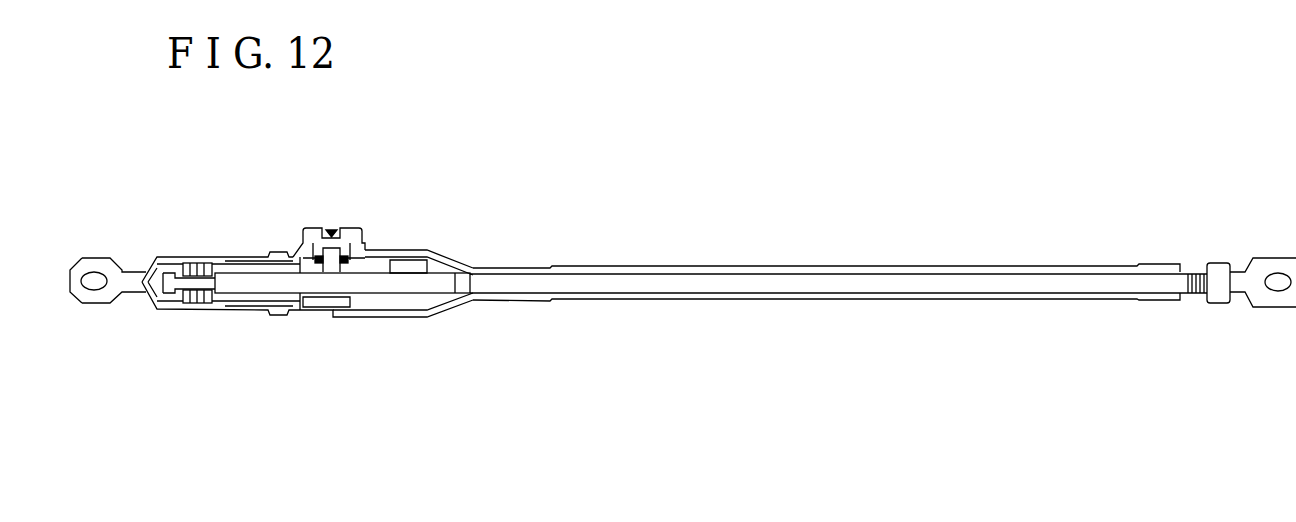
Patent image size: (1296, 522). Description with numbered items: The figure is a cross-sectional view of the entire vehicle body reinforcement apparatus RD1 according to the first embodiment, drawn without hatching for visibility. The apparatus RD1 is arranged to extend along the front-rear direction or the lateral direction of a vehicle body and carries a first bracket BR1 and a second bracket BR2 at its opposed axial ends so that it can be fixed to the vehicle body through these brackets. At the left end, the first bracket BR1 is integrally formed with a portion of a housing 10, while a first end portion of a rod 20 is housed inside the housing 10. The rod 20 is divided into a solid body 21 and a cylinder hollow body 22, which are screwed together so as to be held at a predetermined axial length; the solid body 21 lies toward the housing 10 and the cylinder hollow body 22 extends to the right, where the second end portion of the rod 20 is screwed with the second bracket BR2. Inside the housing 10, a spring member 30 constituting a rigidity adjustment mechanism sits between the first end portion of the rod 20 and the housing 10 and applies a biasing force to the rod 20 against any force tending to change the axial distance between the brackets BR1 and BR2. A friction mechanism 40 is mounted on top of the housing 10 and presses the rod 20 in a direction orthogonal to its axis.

The housing 10 is at (296, 315).
The rod 20 is at (644, 300).
The solid body 21 is at (323, 284).
The cylinder hollow body 22 is at (1028, 298).
The spring member 30 is at (200, 264).
The friction mechanism 40 is at (341, 224).
The first bracket BR1 is at (100, 266).
The second bracket BR2 is at (1274, 262).
The vehicle body reinforcement apparatus RD1 is at (838, 281).